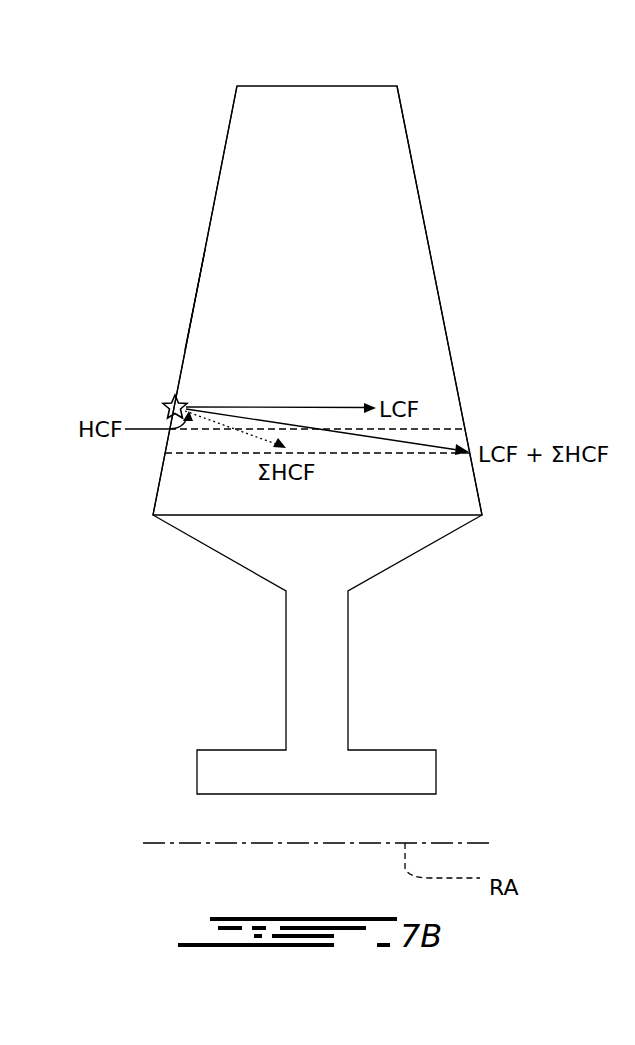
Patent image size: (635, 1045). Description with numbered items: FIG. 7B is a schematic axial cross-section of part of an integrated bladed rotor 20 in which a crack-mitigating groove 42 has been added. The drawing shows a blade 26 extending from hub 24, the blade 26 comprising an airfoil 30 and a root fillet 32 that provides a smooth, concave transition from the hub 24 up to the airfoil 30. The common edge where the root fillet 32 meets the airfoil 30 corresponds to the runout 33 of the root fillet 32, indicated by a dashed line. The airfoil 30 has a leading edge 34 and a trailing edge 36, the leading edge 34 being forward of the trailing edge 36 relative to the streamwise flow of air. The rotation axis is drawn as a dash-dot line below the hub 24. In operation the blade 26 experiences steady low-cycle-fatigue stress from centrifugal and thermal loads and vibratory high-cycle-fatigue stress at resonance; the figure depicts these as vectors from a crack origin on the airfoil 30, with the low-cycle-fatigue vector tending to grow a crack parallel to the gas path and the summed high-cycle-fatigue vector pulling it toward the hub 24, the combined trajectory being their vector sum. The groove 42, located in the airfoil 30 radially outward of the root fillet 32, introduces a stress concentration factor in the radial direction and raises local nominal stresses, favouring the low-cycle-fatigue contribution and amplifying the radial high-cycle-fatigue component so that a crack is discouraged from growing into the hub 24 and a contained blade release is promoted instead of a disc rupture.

The integrated bladed rotor 20 is at (236, 78).
The hub 24 is at (362, 570).
The blade 26 is at (182, 272).
The airfoil 30 is at (217, 352).
The root fillet 32 is at (183, 486).
The runout 33 is at (395, 453).
The leading edge 34 is at (190, 316).
The trailing edge 36 is at (417, 187).
The crack-mitigating groove 42 is at (445, 429).